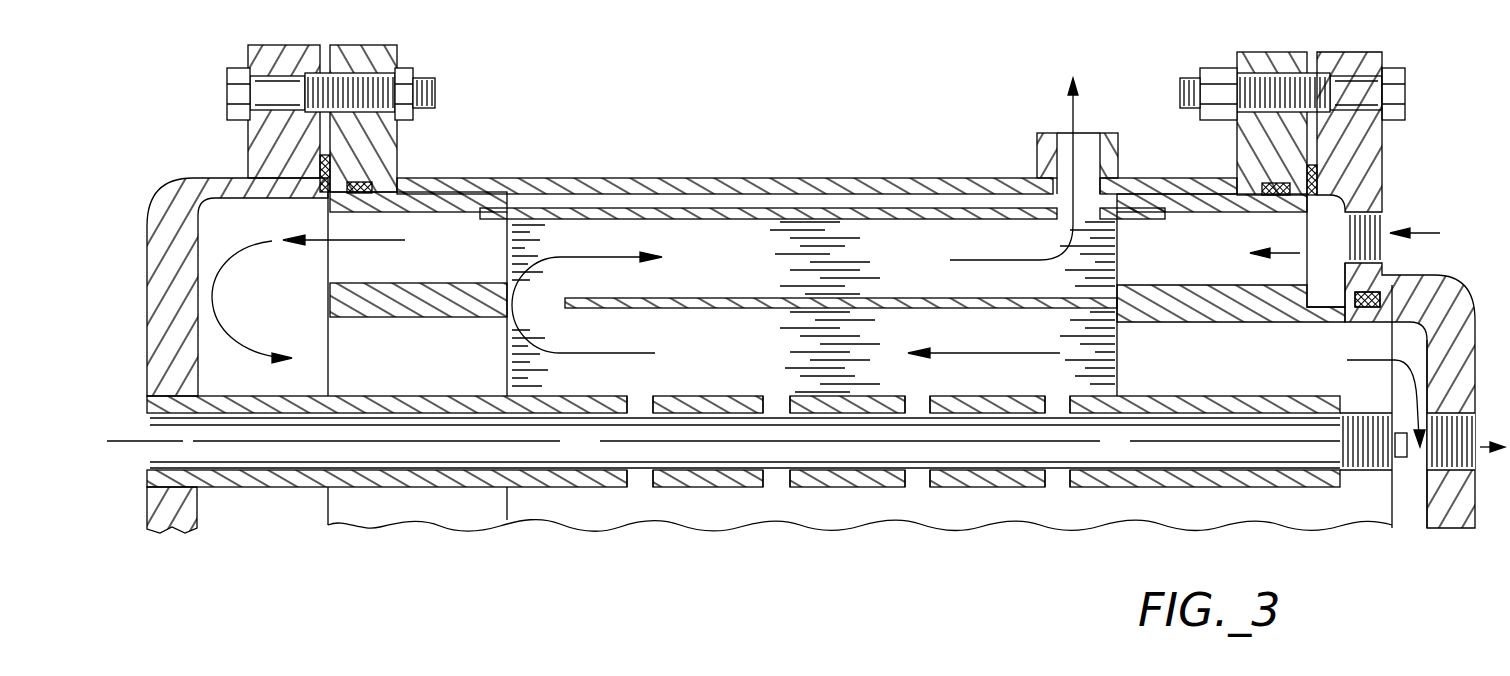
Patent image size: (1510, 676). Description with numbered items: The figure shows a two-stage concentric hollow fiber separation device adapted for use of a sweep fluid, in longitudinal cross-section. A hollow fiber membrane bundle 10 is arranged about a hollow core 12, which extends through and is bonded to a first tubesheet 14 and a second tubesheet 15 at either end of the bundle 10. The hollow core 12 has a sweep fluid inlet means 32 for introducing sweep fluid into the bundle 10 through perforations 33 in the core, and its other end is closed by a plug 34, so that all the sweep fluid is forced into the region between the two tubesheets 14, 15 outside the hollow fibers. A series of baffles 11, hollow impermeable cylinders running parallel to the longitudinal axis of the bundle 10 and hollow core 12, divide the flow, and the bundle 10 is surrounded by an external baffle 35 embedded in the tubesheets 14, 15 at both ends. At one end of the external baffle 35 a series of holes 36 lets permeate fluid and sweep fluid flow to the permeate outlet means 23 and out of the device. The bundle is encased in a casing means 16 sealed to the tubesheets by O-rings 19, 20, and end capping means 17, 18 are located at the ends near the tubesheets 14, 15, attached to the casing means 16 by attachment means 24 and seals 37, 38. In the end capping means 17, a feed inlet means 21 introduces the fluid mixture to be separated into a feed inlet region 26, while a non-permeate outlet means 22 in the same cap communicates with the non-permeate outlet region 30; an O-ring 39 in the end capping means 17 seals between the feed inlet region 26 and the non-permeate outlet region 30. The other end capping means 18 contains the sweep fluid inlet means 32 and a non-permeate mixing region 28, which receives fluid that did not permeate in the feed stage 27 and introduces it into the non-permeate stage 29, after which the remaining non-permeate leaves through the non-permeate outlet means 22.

The hollow fiber membrane bundle 10 is at (829, 508).
The baffles 11 is at (925, 292).
The hollow core 12 is at (603, 497).
The first tubesheet 14 is at (1204, 508).
The second tubesheet 15 is at (428, 225).
The casing means 16 is at (878, 188).
The end capping means 17 is at (1445, 298).
The end capping means 18 is at (188, 188).
The O-ring 19 is at (1265, 185).
The O-ring 20 is at (362, 186).
The feed inlet means 21 is at (1382, 215).
The non-permeate outlet means 22 is at (1478, 468).
The permeate outlet means 23 is at (1087, 140).
The attachment means 24 is at (242, 70).
The feed inlet region 26 is at (1325, 275).
The feed stage 27 is at (742, 235).
The non-permeate mixing region 28 is at (240, 213).
The non-permeate stage 29 is at (972, 385).
The non-permeate outlet region 30 is at (1420, 500).
The sweep fluid inlet means 32 is at (146, 463).
The perforations 33 is at (772, 478).
The plug 34 is at (1393, 465).
The external baffle 35 is at (790, 207).
The holes 36 is at (1090, 210).
The seal 37 is at (1318, 188).
The seal 38 is at (322, 190).
The O-ring 39 is at (1383, 297).